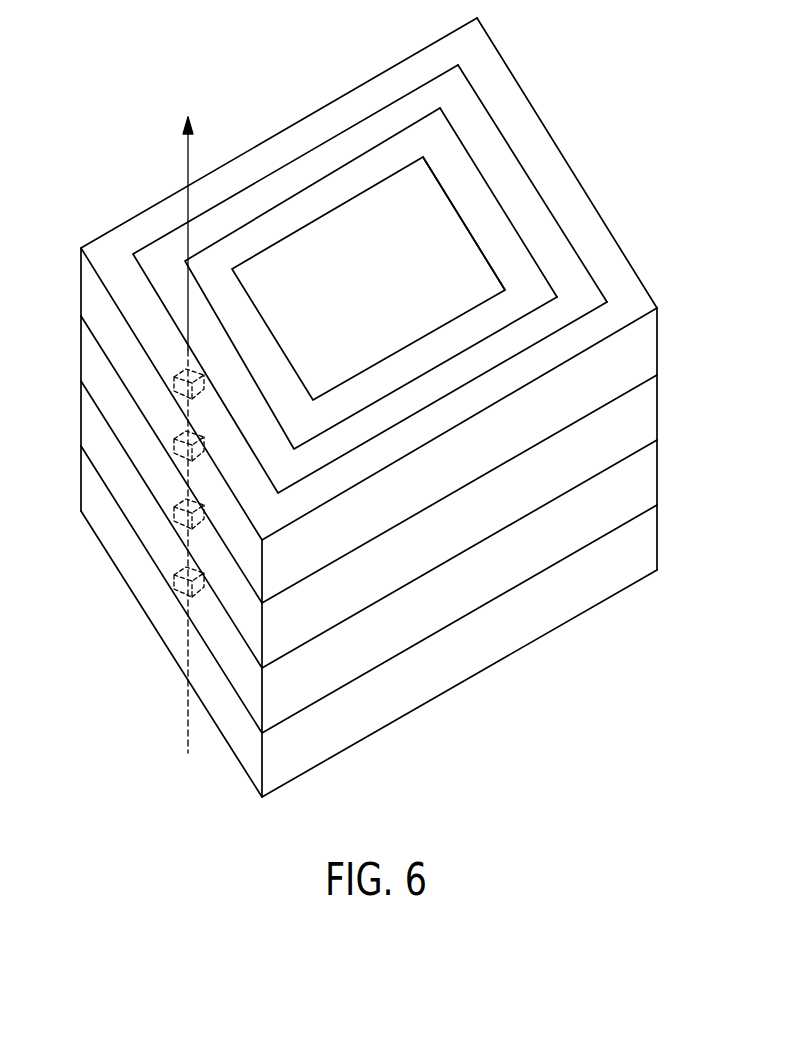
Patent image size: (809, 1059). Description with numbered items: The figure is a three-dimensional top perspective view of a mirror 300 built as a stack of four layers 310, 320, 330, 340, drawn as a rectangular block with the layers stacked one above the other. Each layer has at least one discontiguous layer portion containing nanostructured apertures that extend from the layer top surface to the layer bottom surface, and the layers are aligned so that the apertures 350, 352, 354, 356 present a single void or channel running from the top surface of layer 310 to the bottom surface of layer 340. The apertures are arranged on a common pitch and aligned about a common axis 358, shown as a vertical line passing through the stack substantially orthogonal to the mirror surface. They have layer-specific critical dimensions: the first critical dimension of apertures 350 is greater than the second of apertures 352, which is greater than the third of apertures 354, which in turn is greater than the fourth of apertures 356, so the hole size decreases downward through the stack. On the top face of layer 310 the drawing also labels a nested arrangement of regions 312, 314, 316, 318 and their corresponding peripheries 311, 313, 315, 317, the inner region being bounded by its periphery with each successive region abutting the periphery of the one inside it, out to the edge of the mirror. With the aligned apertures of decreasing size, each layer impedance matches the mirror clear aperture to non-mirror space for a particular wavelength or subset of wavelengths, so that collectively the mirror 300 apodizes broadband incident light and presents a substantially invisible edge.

The mirror 300 is at (124, 80).
The layer 310 is at (95, 298).
The layer 320 is at (95, 363).
The layer 330 is at (95, 428).
The layer 340 is at (95, 493).
The inner region boundary 311 is at (433, 182).
The central region 312 is at (385, 289).
The second region boundary 313 is at (497, 200).
The second region 314 is at (230, 279).
The third region boundary 315 is at (554, 218).
The third region 316 is at (180, 275).
The outer region boundary 317 is at (612, 238).
The outer region 318 is at (130, 272).
The nanostructured apertures 350 is at (182, 378).
The nanostructured apertures 352 is at (182, 450).
The nanostructured apertures 354 is at (182, 513).
The nanostructured apertures 356 is at (182, 580).
The axis 358 is at (187, 167).